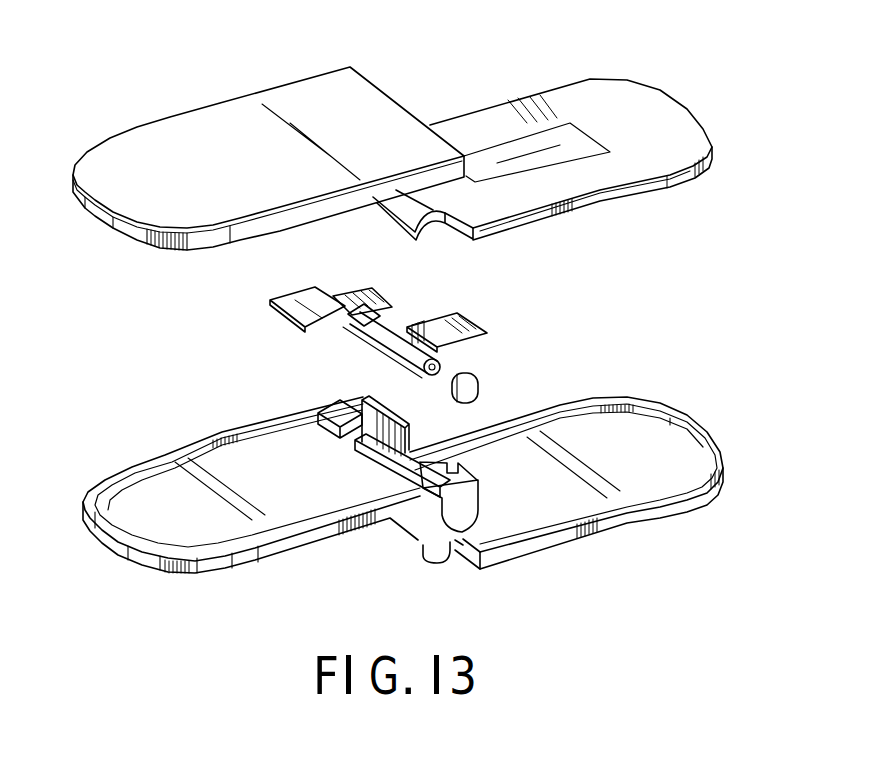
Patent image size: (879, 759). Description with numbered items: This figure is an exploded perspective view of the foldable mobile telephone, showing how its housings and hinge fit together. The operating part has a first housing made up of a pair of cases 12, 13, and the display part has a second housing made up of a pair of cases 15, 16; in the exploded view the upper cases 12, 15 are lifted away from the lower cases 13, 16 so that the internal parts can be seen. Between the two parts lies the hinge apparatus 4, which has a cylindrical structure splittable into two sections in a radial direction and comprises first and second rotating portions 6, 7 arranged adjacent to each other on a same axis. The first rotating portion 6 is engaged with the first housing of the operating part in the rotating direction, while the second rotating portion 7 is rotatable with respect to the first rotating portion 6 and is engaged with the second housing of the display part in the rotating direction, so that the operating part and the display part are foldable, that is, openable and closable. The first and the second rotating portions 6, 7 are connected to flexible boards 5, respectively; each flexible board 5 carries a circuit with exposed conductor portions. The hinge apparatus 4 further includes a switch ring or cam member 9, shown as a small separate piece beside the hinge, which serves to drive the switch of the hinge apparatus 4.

The hinge apparatus 4 is at (406, 328).
The flexible board 5 is at (303, 297).
The first rotating portion 6 is at (353, 323).
The second rotating portion 7 is at (379, 348).
The switch ring or cam member 9 is at (477, 382).
The case 12 is at (215, 127).
The case 13 is at (293, 505).
The case 15 is at (543, 103).
The case 16 is at (610, 510).